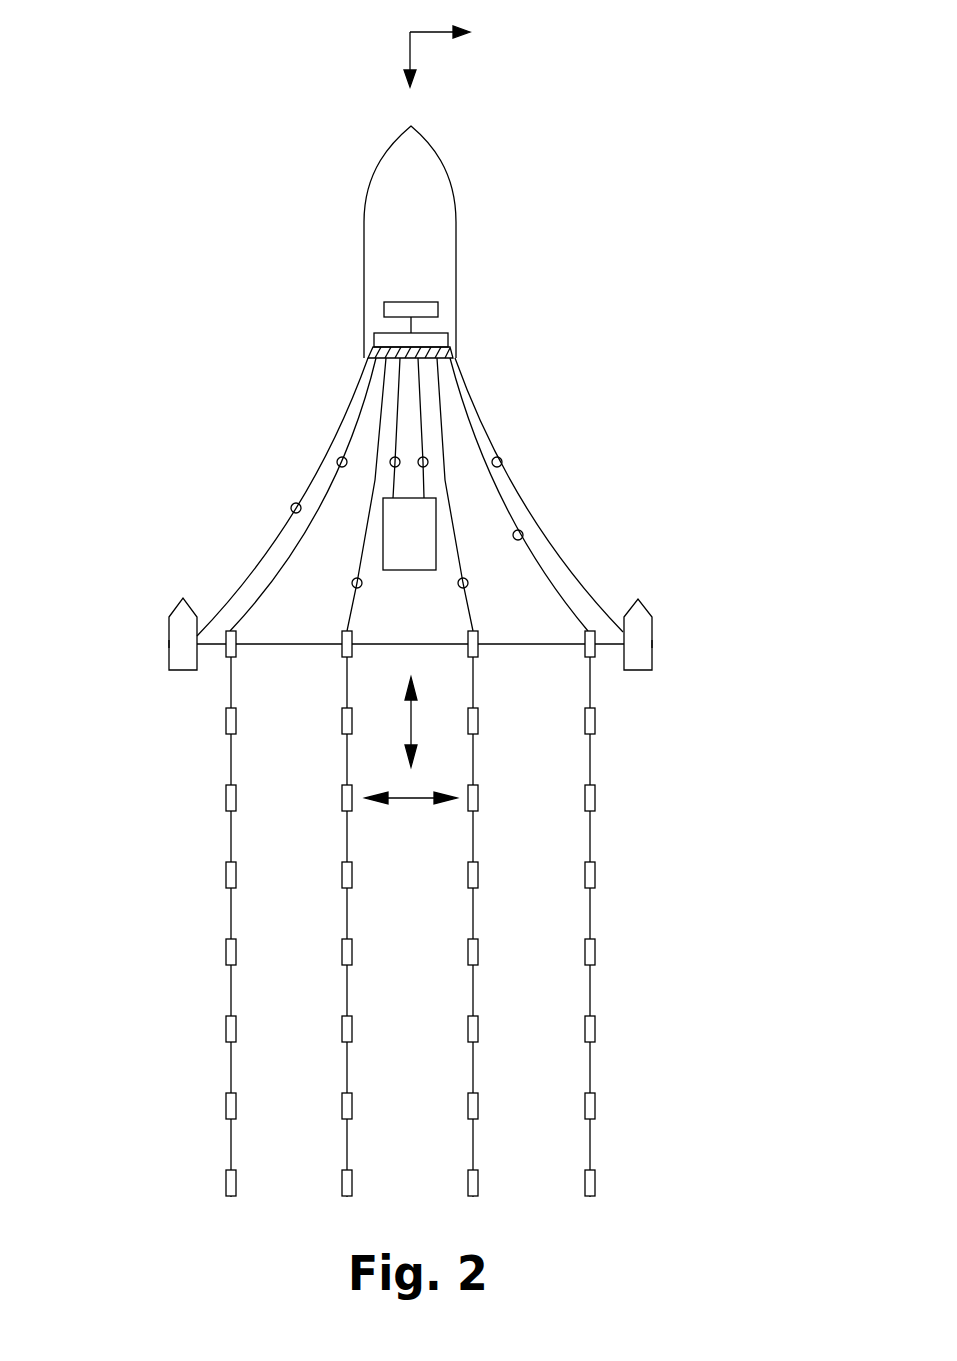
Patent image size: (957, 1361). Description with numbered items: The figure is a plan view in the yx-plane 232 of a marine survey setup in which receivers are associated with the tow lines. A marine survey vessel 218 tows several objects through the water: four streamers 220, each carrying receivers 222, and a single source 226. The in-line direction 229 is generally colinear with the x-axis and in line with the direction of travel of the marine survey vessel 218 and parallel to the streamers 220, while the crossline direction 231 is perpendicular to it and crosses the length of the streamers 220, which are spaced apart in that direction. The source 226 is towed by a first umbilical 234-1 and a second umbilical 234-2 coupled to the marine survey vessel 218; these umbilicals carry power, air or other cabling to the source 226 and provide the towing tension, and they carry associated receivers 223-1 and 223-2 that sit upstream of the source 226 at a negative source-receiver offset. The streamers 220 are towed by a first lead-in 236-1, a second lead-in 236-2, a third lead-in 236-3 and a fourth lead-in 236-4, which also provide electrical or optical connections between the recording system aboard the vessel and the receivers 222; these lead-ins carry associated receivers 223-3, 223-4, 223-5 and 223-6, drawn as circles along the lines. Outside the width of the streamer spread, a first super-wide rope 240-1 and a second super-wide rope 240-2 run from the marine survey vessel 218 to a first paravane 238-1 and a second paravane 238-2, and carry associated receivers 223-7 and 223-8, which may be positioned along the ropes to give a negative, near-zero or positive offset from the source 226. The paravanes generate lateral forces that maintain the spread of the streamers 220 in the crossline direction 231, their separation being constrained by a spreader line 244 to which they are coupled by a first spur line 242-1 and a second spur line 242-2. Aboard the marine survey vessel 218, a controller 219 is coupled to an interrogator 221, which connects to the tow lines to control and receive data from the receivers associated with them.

The marine survey vessel 218 is at (456, 240).
The controller 219 is at (438, 310).
The interrogator 221 is at (448, 342).
The streamer 220 is at (228, 680).
The receiver 222 is at (225, 720).
The receiver 223-1 is at (392, 456).
The receiver 223-2 is at (427, 460).
The receiver 223-3 is at (337, 461).
The receiver 223-4 is at (352, 582).
The receiver 223-5 is at (468, 582).
The receiver 223-6 is at (522, 531).
The receiver 223-7 is at (295, 503).
The receiver 223-8 is at (502, 462).
The source 226 is at (409, 570).
The in-line direction 229 is at (413, 720).
The crossline direction 231 is at (408, 800).
The yx-plane 232 is at (410, 32).
The first umbilical 234-1 is at (399, 382).
The second umbilical 234-2 is at (420, 415).
The first lead-in 236-1 is at (330, 485).
The second lead-in 236-2 is at (380, 435).
The third lead-in 236-3 is at (446, 473).
The fourth lead-in 236-4 is at (503, 500).
The first paravane 238-1 is at (169, 644).
The second paravane 238-2 is at (652, 644).
The first super-wide rope 240-1 is at (278, 530).
The second super-wide rope 240-2 is at (555, 551).
The first spur line 242-1 is at (206, 630).
The second spur line 242-2 is at (600, 640).
The spreader line 244 is at (292, 647).